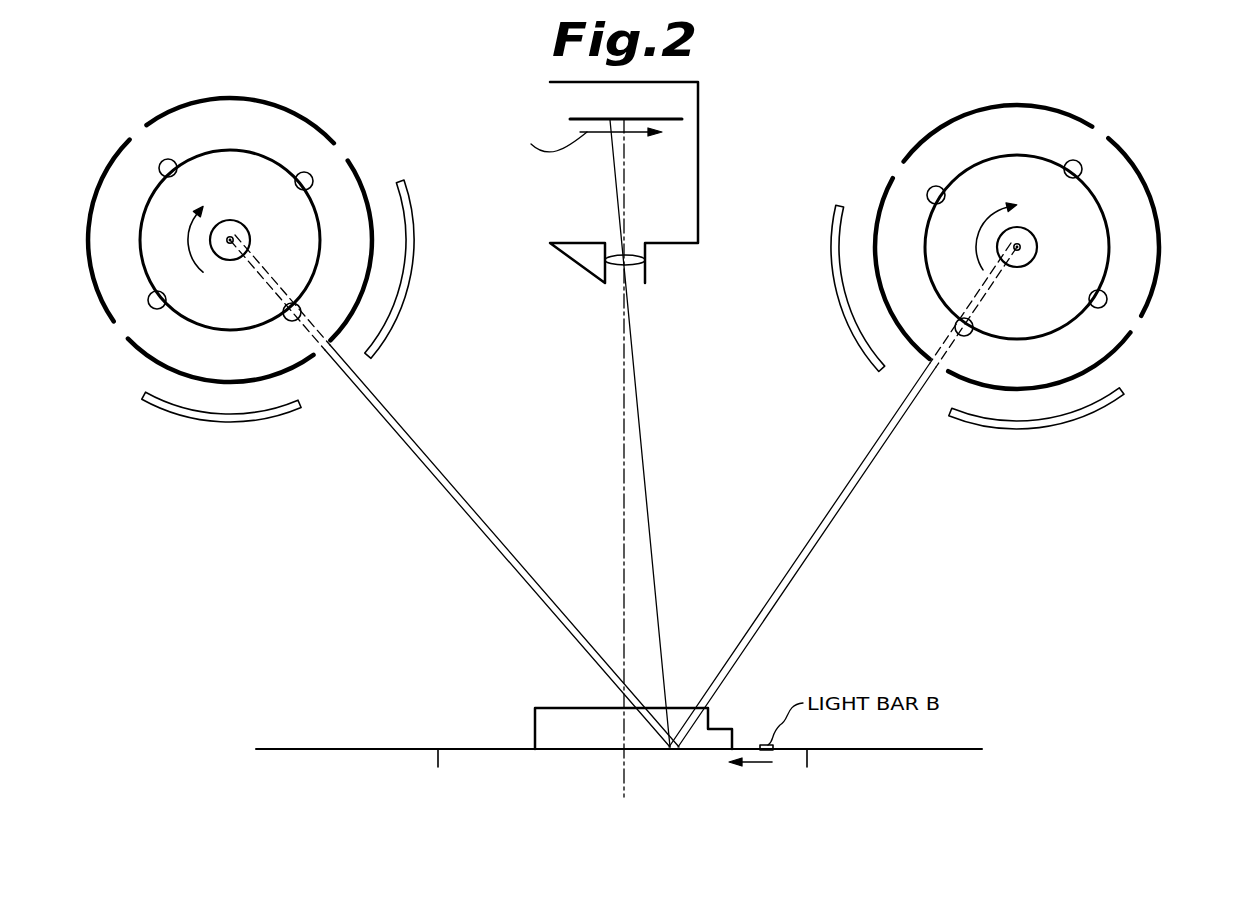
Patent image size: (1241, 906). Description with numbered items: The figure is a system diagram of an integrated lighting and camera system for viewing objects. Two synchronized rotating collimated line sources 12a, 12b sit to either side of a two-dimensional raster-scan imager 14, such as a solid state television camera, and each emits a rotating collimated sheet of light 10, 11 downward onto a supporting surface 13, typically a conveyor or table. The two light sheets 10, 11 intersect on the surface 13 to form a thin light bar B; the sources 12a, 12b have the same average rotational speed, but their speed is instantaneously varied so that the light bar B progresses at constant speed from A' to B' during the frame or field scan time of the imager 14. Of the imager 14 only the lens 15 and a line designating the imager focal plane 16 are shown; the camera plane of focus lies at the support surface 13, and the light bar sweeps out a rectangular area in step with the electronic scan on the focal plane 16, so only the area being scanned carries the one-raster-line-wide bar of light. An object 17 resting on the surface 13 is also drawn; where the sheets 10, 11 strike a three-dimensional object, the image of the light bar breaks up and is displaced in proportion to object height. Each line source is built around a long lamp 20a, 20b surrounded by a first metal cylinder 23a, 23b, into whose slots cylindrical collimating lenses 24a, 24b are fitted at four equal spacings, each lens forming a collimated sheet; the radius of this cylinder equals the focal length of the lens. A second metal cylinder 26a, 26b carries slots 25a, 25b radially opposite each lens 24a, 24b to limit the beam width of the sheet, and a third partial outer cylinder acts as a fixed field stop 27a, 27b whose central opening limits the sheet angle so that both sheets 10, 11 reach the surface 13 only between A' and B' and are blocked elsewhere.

The rotating collimated sheet of light 10 is at (462, 500).
The rotating collimated sheet of light 11 is at (843, 496).
The synchronized line source 12a is at (241, 249).
The synchronized line source 12b is at (1024, 257).
The supporting surface 13 is at (320, 747).
The two-dimensional raster-scan imager 14 is at (700, 128).
The lens 15 is at (604, 275).
The imager focal plane 16 is at (622, 118).
The object 17 is at (567, 707).
The lamp 20a is at (237, 221).
The lamp 20b is at (1030, 233).
The first metal cylinder 23a is at (214, 150).
The first metal cylinder 23b is at (1110, 238).
The cylindrical collimating lens 24a is at (299, 306).
The cylindrical collimating lens 24b is at (1097, 309).
The slot 25a is at (323, 352).
The slot 25b is at (1141, 327).
The second metal cylinder 26a is at (143, 352).
The second metal cylinder 26b is at (1150, 192).
The fixed field stop 27a is at (210, 422).
The fixed field stop 27b is at (1062, 426).